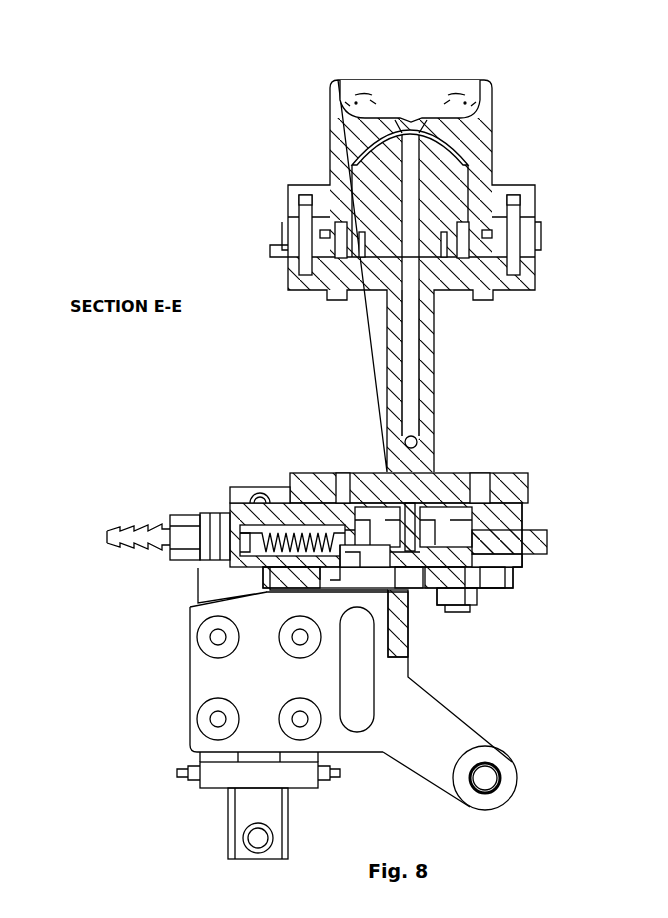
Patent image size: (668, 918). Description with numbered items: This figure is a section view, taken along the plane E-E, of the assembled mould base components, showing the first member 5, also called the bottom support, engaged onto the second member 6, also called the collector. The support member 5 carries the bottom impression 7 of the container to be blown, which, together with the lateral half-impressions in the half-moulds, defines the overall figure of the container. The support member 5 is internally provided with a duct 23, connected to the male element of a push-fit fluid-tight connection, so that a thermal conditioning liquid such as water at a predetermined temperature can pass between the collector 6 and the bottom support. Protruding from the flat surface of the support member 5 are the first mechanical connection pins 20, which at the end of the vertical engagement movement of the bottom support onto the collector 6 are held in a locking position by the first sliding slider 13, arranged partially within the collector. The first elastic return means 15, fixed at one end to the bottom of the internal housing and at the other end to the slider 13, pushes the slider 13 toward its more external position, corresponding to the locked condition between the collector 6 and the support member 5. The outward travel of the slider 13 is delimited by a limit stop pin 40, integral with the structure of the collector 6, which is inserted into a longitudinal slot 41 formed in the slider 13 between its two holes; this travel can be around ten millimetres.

The first member 5 is at (405, 276).
The second member 6 is at (536, 516).
The bottom impression 7 is at (413, 100).
The first sliding slider 13 is at (543, 542).
The first elastic return means 15 is at (237, 490).
The first mechanical connection pins 20 is at (485, 590).
The duct 23 is at (408, 388).
The limit stop pin 40 is at (445, 480).
The longitudinal slot 41 is at (420, 593).